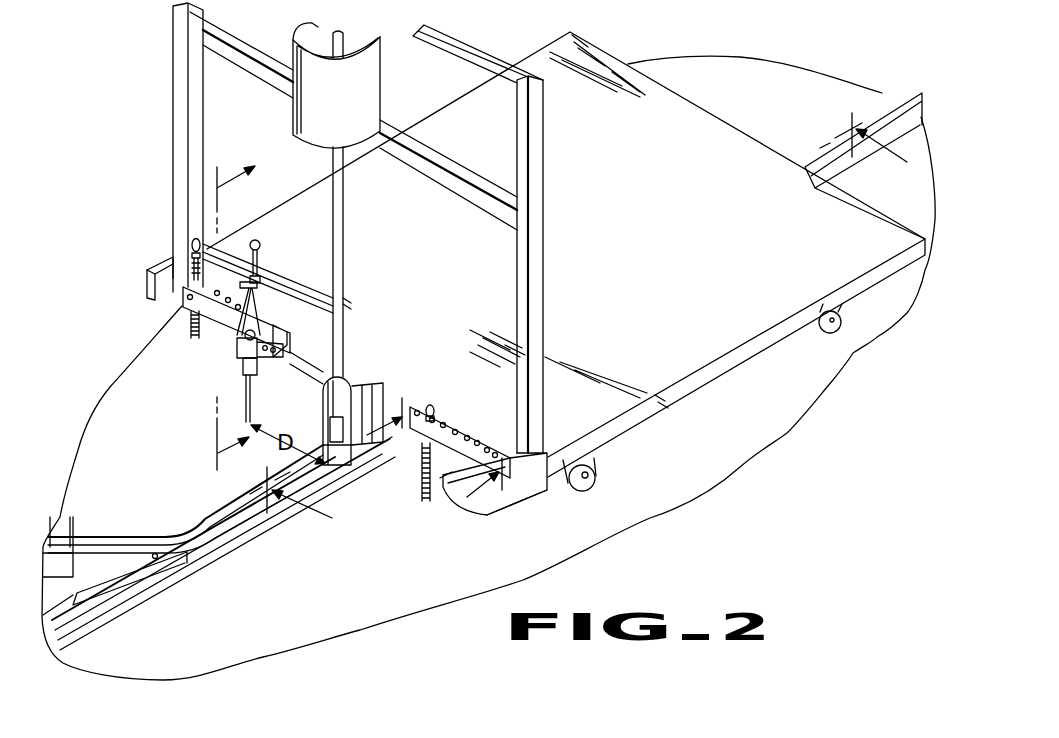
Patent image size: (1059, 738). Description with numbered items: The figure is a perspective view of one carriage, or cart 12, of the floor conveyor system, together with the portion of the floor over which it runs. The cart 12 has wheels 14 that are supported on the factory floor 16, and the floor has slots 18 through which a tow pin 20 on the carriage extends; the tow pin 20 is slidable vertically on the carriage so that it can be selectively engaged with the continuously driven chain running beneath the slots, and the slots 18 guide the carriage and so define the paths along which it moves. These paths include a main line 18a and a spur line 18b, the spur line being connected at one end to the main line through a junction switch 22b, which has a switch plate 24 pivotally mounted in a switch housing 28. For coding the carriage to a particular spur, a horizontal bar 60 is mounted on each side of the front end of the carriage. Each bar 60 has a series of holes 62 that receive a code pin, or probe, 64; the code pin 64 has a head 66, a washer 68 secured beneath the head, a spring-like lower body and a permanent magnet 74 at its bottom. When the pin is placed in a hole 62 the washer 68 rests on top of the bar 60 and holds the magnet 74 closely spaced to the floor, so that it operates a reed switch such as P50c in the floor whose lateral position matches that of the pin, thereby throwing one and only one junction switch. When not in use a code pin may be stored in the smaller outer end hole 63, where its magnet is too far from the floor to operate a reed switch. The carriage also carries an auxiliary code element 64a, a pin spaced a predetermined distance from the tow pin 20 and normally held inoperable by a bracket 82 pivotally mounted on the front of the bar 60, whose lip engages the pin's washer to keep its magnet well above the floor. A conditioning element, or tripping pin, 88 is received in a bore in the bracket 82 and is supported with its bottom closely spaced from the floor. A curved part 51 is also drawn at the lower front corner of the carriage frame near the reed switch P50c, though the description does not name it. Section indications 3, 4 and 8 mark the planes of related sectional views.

The cart 12 is at (165, 112).
The wheels 14 is at (596, 465).
The factory floor 16 is at (760, 415).
The slots 18 is at (900, 120).
The main line 18a is at (110, 603).
The spur line 18b is at (84, 542).
The tow pin 20 is at (345, 333).
The junction switch 22b is at (168, 524).
The switch plate 24 is at (192, 557).
The switch housing 28 is at (60, 622).
The hook bracket 51 is at (446, 506).
The reed switch P50c is at (426, 506).
The horizontal bar 60 is at (277, 331).
The holes 62 is at (228, 298).
The outer end hole 63 is at (176, 290).
The code pin 64 is at (160, 263).
The auxiliary code element 64a is at (269, 251).
The head 66 is at (191, 241).
The washer 68 is at (191, 255).
The permanent magnet 74 is at (192, 340).
The bracket 82 is at (240, 324).
The conditioning element 88 is at (245, 378).
The section line 3 is at (578, 326).
The section line 4 is at (441, 436).
The section line 8 is at (226, 312).